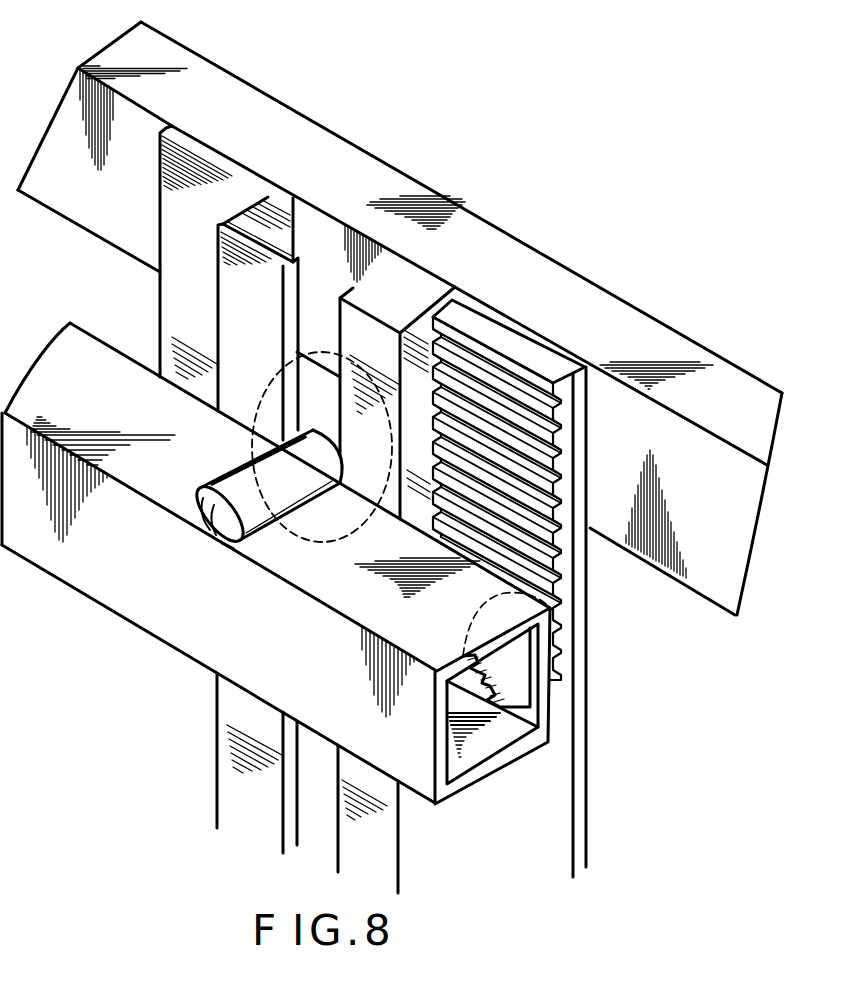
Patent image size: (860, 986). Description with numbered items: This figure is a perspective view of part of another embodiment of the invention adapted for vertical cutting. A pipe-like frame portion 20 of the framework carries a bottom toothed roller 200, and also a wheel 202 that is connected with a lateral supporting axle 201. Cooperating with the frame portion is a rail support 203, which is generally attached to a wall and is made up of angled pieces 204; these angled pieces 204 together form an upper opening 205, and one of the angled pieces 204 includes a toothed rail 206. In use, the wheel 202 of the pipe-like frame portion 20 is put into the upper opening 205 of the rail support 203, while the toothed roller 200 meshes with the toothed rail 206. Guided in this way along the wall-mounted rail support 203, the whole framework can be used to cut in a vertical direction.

The pipe-like frame portion 20 is at (90, 600).
The bottom toothed roller 200 is at (517, 678).
The lateral supporting axle 201 is at (246, 517).
The wheel 202 is at (385, 245).
The rail support 203 is at (627, 322).
The angled pieces 204 is at (303, 352).
The upper opening 205 is at (305, 218).
The toothed rail 206 is at (488, 380).